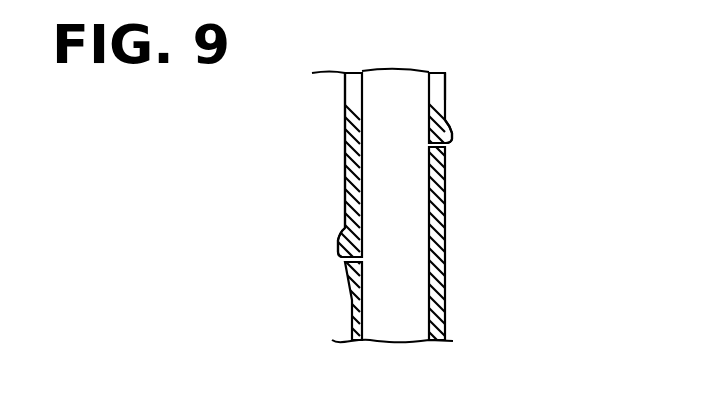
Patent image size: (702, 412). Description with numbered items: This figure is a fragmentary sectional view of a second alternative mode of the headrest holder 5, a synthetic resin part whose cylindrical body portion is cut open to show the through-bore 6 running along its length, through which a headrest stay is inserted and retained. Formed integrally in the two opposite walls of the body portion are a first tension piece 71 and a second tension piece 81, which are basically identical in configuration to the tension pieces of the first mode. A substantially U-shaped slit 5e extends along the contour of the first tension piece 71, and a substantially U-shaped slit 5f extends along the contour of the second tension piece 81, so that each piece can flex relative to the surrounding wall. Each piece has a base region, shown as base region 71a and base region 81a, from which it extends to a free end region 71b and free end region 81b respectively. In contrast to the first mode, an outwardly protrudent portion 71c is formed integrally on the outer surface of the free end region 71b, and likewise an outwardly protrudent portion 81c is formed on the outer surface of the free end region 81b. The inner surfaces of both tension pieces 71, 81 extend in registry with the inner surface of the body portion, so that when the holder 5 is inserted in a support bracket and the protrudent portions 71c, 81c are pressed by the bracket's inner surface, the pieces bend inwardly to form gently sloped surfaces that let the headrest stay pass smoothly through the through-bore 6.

The headrest holder 5 is at (466, 244).
The substantially U-shaped slit 5e is at (345, 262).
The substantially U-shaped slit 5f is at (447, 148).
The through-bore 6 is at (412, 301).
The first tension piece 71 is at (345, 194).
The base region of first tension piece 71a is at (345, 165).
The free end region of first tension piece 71b is at (345, 224).
The outwardly protrudent portion 71c is at (339, 245).
The second tension piece 81 is at (447, 103).
The base region of second tension piece 81a is at (447, 76).
The free end region of second tension piece 81b is at (451, 128).
The outwardly protrudent portion 81c is at (452, 143).